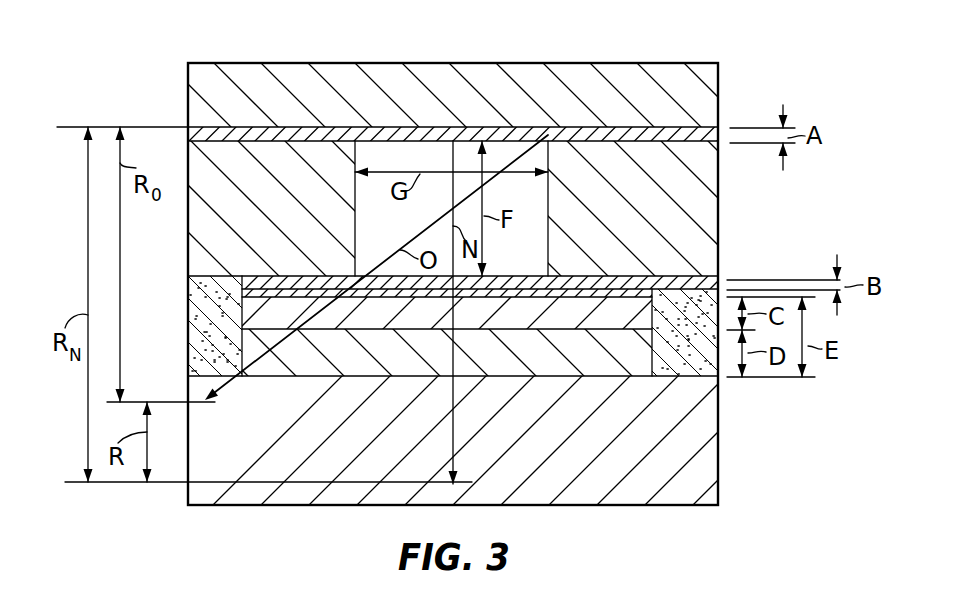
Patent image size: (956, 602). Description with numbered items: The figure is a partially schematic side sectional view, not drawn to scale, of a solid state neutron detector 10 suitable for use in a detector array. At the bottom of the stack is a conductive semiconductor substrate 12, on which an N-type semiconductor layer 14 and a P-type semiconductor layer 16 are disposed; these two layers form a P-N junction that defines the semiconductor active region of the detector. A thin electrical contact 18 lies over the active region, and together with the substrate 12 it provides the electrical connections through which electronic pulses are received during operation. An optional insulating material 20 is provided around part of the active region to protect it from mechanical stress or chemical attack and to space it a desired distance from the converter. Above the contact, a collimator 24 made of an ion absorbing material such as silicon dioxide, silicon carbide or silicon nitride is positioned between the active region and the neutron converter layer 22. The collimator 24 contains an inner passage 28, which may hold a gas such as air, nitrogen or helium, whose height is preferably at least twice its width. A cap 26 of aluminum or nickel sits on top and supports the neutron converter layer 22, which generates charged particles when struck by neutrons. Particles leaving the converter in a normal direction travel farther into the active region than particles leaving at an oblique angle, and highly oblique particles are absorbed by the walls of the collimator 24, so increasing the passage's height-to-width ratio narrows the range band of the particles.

The neutron detector 10 is at (128, 62).
The substrate 12 is at (203, 421).
The N-type semiconductor layer 14 is at (256, 354).
The P-type semiconductor layer 16 is at (255, 316).
The electrical contact 18 is at (245, 291).
The insulating material 20 is at (198, 305).
The neutron converter layer 22 is at (246, 132).
The collimator 24 is at (190, 224).
The cap 26 is at (405, 63).
The inner passage 28 is at (532, 264).